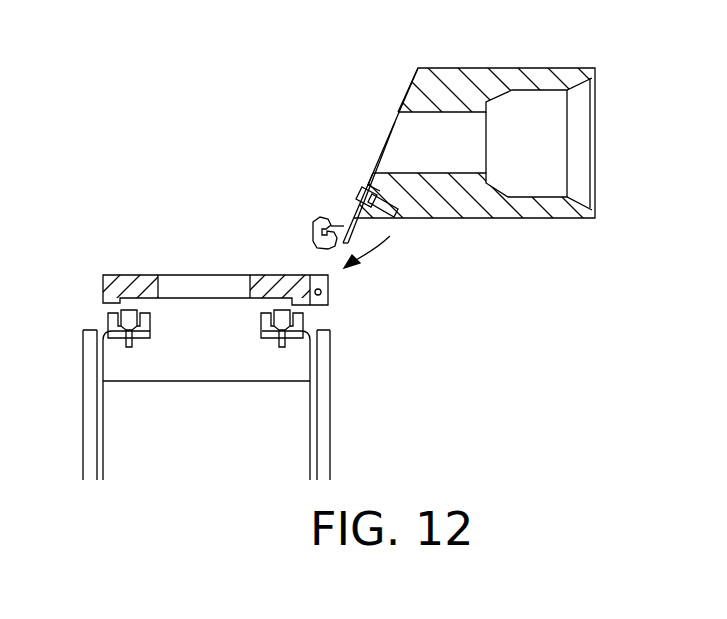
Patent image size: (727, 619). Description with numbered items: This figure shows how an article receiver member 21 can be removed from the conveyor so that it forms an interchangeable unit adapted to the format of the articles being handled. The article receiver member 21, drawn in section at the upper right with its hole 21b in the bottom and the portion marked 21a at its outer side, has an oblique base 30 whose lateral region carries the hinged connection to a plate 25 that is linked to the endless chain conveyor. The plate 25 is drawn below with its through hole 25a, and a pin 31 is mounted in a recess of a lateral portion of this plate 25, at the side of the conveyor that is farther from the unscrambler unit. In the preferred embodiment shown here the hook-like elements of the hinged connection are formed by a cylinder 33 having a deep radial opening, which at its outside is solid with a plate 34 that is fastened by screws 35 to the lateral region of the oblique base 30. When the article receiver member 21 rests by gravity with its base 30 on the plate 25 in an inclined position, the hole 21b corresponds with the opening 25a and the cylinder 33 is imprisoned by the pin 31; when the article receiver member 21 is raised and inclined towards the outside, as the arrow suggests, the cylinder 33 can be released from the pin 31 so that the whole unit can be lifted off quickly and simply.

The article receiver member 21 is at (498, 73).
The lower portion of clamp block 21a is at (590, 206).
The hole of the bottom 21b is at (402, 138).
The base 30 is at (405, 92).
The cylinder 33 is at (313, 219).
The plate 34 is at (356, 205).
The screw 35 is at (398, 218).
The plate 25 is at (103, 290).
The through hole 25a is at (203, 285).
The pin 31 is at (327, 290).